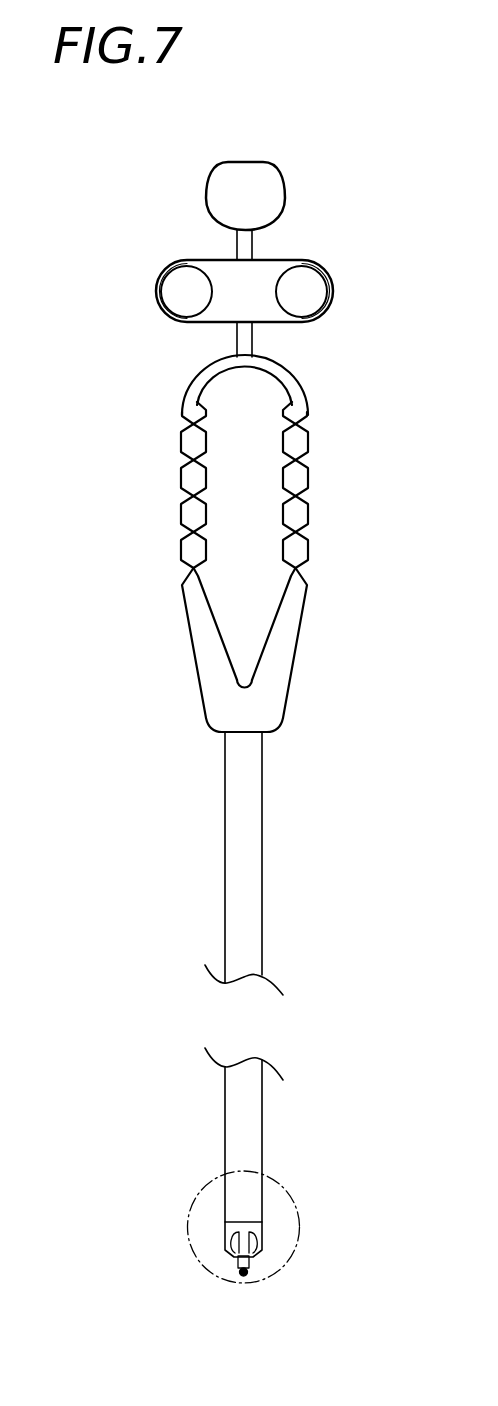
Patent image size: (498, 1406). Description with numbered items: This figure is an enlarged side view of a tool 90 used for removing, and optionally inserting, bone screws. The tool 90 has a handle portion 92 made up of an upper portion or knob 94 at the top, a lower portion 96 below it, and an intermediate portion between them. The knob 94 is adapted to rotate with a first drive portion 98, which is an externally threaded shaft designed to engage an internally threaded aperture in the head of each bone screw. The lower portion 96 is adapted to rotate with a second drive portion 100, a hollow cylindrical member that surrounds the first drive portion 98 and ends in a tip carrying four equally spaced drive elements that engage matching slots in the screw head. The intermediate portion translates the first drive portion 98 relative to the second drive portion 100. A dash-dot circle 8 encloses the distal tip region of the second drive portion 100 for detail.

The tool 90 is at (113, 397).
The handle portion 92 is at (317, 207).
The upper portion or knob 94 is at (220, 188).
The first drive portion 98 is at (334, 293).
The lower portion 96 is at (302, 462).
The second drive portion 100 is at (233, 1137).
The detail area circle 8 is at (187, 1230).